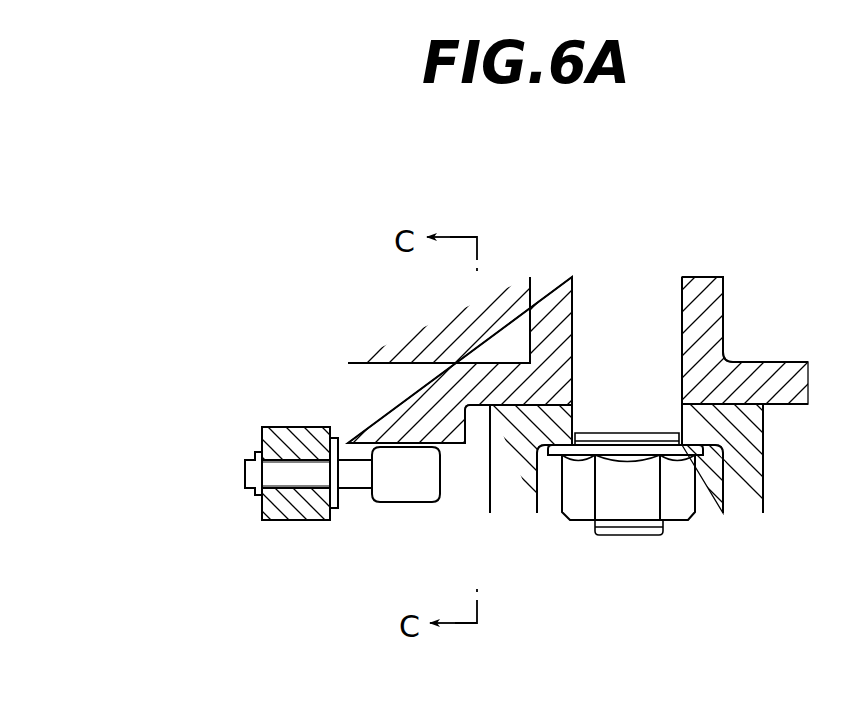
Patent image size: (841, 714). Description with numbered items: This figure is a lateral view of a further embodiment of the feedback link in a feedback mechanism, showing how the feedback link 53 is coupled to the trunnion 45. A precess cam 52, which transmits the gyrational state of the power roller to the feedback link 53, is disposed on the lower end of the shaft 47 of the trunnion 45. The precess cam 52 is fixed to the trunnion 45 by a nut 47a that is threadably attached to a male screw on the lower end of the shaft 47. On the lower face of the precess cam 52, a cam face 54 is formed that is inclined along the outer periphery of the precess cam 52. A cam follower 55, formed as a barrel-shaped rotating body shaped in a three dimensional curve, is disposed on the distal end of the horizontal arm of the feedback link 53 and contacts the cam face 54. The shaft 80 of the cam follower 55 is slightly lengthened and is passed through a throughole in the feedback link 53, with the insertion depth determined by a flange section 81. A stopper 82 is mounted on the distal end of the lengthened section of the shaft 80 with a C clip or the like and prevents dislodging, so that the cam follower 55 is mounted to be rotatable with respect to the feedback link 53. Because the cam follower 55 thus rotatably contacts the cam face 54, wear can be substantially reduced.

The trunnion 45 is at (642, 286).
The shaft 47 is at (657, 308).
The nut 47a is at (688, 518).
The precess cam 52 is at (376, 360).
The feedback link 53 is at (290, 427).
The cam face 54 is at (358, 478).
The cam follower 55 is at (416, 509).
The shaft 80 is at (295, 477).
The flange section 81 is at (340, 506).
The stopper 82 is at (258, 497).